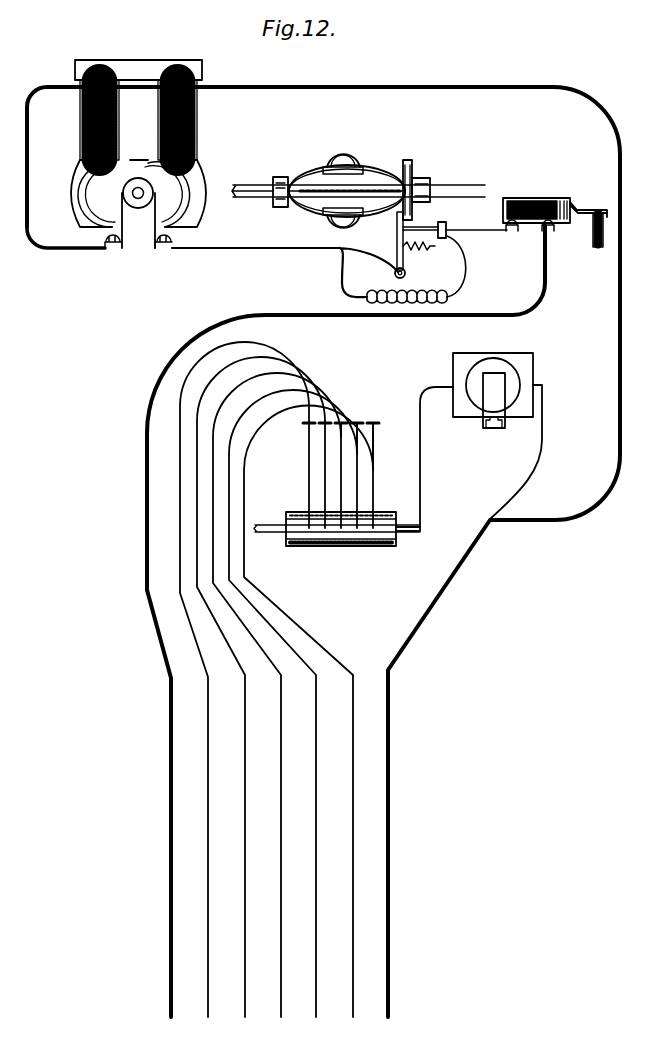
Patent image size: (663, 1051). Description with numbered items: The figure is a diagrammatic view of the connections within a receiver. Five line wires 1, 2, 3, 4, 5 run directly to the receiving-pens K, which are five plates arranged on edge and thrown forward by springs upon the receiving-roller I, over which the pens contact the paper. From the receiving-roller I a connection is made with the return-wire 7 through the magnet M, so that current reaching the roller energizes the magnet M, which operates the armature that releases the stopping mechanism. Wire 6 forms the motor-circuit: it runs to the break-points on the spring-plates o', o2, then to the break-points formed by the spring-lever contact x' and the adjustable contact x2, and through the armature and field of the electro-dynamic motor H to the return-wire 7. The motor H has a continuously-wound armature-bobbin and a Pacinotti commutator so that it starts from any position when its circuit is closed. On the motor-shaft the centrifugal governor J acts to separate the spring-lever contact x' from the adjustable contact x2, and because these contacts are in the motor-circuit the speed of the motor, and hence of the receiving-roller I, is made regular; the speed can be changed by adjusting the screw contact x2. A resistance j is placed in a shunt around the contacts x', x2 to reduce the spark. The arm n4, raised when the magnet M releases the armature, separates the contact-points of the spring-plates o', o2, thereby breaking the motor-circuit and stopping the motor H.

The wire 1 is at (244, 693).
The wire 2 is at (261, 700).
The wire 3 is at (277, 708).
The wire 4 is at (293, 717).
The wire 5 is at (308, 725).
The wire 6 is at (346, 635).
The return-wire 7 is at (323, 565).
The electro-dynamic motor H is at (138, 154).
The centrifugal governor J is at (358, 178).
The resistance j is at (416, 269).
The spring-lever contact x' is at (408, 245).
The adjustable contact x2 is at (455, 224).
The spring-plate o' is at (555, 201).
The spring-plate o2 is at (541, 230).
The arm n4 is at (596, 241).
The magnet M is at (493, 380).
The receiving-pens K is at (329, 475).
The receiving-roller I is at (380, 547).